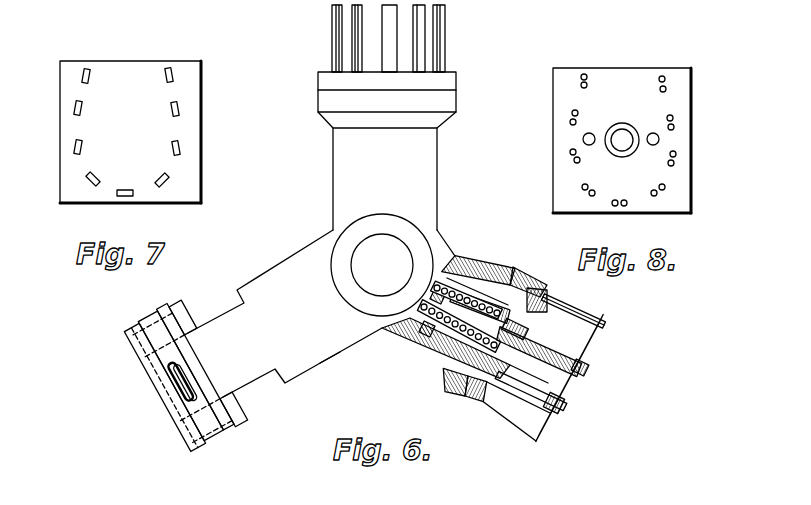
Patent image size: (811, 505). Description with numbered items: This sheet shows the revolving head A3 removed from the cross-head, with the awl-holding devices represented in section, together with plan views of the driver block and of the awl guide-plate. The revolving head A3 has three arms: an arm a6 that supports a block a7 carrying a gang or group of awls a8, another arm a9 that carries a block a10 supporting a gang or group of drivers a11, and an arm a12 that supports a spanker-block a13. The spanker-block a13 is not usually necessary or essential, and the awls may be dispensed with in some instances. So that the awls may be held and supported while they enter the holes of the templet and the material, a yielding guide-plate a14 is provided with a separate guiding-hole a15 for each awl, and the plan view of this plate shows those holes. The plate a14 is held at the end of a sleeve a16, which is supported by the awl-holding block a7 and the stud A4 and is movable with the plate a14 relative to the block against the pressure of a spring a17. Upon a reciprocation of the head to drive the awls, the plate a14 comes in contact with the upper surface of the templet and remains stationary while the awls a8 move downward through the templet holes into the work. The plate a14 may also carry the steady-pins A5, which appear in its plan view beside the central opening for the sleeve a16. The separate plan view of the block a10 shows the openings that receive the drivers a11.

In FIG. 7, the drivers a11 is at (74, 109).
In FIG. 6, the drivers a11 is at (334, 35).
In FIG. 7, the driver block a10 is at (130, 132).
In FIG. 6, the driver block a10 is at (447, 86).
In FIG. 6, the arm a9 is at (384, 222).
In FIG. 6, the arm a12 is at (321, 313).
In FIG. 6, the revolving head A3 is at (321, 358).
In FIG. 6, the spanker-block a13 is at (172, 393).
In FIG. 6, the arm a6 is at (448, 256).
In FIG. 6, the spring a17 is at (485, 268).
In FIG. 6, the awl-holding block a7 is at (546, 269).
In FIG. 6, the stud A4 is at (557, 313).
In FIG. 8, the yielding guide-plate a14 is at (622, 140).
In FIG. 6, the yielding guide-plate a14 is at (601, 349).
In FIG. 8, the steady-pins A5 is at (589, 133).
In FIG. 6, the steady-pins A5 is at (587, 366).
In FIG. 8, the sleeve a16 is at (623, 132).
In FIG. 6, the sleeve a16 is at (563, 399).
In FIG. 6, the awls a8 is at (497, 408).
In FIG. 8, the guiding-hole a15 is at (580, 86).